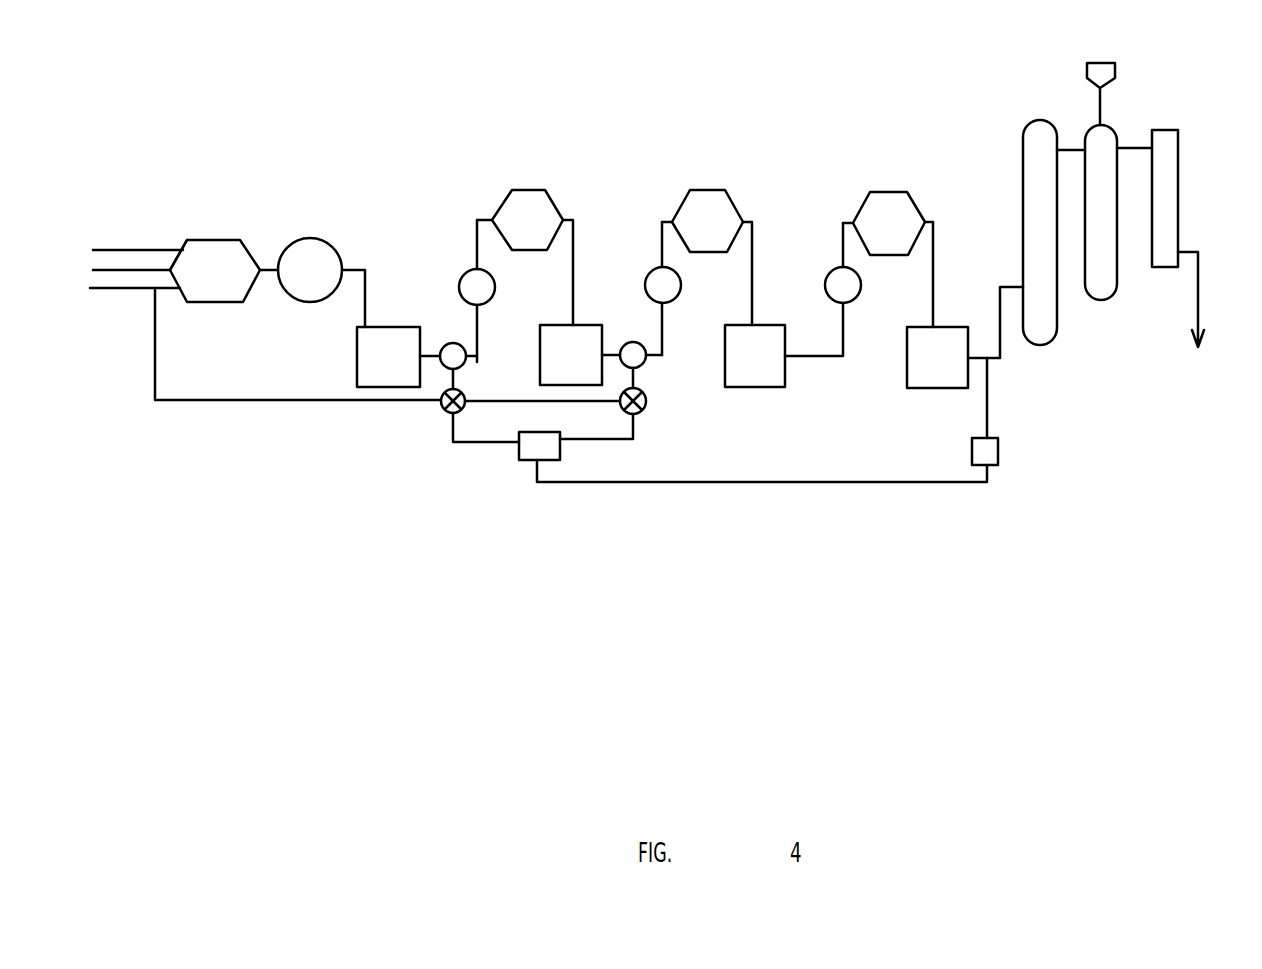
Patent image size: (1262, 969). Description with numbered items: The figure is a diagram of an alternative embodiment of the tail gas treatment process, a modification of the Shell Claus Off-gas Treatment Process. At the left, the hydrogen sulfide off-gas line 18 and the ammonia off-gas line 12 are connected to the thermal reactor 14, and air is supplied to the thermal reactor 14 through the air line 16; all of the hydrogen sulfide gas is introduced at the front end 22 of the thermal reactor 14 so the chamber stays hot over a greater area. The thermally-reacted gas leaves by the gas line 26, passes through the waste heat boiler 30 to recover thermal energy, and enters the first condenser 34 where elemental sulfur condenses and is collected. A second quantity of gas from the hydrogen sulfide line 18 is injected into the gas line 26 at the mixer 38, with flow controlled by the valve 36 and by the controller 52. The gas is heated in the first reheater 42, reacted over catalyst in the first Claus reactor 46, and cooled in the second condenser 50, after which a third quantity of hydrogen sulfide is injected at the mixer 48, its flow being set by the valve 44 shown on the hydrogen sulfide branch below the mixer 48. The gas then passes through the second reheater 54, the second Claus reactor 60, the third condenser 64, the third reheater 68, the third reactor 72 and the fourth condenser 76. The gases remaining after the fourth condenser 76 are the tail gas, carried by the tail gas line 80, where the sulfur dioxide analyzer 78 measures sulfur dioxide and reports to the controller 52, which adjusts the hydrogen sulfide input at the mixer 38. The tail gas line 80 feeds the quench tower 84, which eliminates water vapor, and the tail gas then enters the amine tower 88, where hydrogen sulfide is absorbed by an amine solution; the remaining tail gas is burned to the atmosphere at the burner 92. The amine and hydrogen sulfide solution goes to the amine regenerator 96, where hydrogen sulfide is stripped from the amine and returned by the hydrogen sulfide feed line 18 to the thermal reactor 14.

The ammonia off-gas line 12 is at (108, 248).
The air line 16 is at (140, 268).
The front end 22 is at (188, 262).
The thermal reactor 14 is at (235, 255).
The hydrogen sulfide off-gas line 18 is at (128, 295).
The waste heat boiler 30 is at (305, 250).
The gas line 26 is at (268, 276).
The first condenser 34 is at (375, 346).
The mixer 38 is at (458, 343).
The valve 36 is at (445, 411).
The first reheater 42 is at (473, 269).
The first Claus reactor 46 is at (525, 186).
The second condenser 50 is at (550, 325).
The mixer 48 is at (636, 342).
The second bypass valve 44 is at (650, 403).
The second reheater 54 is at (655, 268).
The second Claus reactor 60 is at (708, 184).
The third condenser 64 is at (738, 323).
The third reheater 68 is at (831, 277).
The third reactor 72 is at (880, 188).
The fourth condenser 76 is at (912, 326).
The tail gas line 80 is at (1000, 322).
The sulfur dioxide analyzer 78 is at (1000, 451).
The controller 52 is at (516, 455).
The quench tower 84 is at (1027, 120).
The amine tower 88 is at (1110, 126).
The burner 92 is at (1116, 76).
The amine regenerator 96 is at (1180, 148).